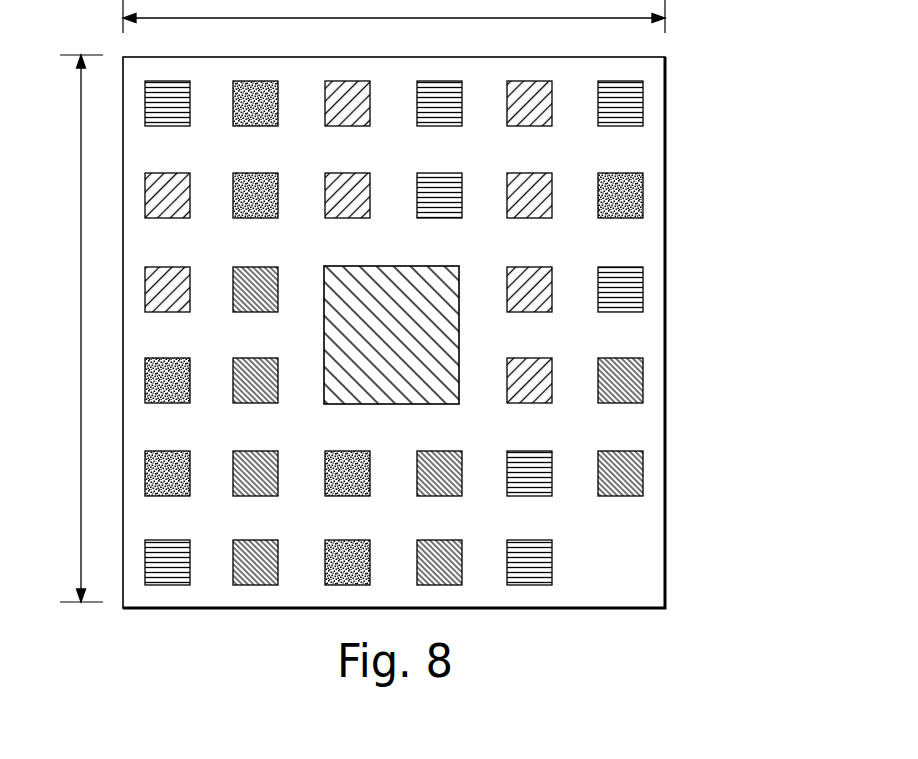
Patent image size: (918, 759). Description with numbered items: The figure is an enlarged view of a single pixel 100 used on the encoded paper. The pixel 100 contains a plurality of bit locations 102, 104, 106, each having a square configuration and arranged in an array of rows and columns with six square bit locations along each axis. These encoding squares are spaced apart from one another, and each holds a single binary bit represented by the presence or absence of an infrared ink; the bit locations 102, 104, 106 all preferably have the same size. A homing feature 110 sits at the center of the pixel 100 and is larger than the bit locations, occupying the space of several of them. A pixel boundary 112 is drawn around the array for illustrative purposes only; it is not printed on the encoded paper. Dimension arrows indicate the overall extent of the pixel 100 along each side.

The pixel 100 is at (445, 332).
The bit location 102 is at (189, 115).
The bit location 104 is at (278, 115).
The bit location 106 is at (370, 115).
The homing feature 110 is at (360, 266).
The pixel boundary 112 is at (665, 477).